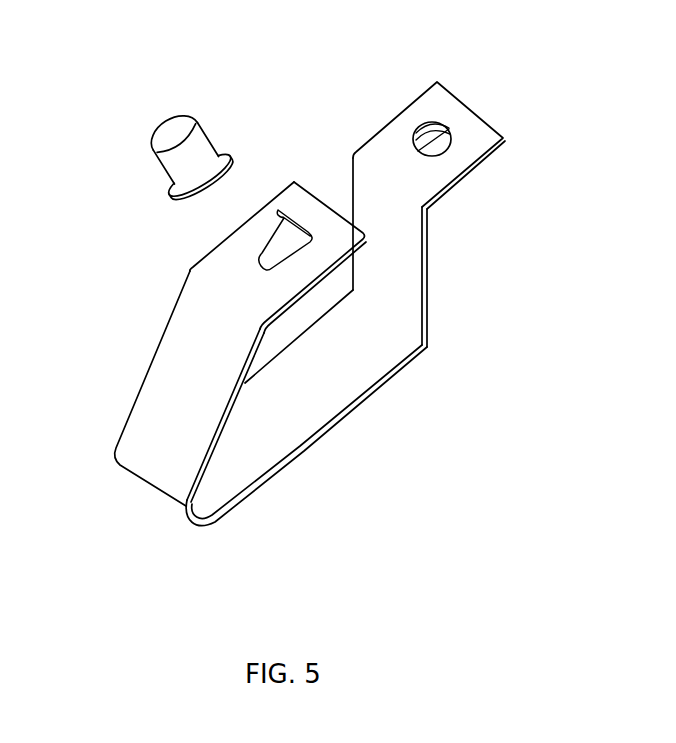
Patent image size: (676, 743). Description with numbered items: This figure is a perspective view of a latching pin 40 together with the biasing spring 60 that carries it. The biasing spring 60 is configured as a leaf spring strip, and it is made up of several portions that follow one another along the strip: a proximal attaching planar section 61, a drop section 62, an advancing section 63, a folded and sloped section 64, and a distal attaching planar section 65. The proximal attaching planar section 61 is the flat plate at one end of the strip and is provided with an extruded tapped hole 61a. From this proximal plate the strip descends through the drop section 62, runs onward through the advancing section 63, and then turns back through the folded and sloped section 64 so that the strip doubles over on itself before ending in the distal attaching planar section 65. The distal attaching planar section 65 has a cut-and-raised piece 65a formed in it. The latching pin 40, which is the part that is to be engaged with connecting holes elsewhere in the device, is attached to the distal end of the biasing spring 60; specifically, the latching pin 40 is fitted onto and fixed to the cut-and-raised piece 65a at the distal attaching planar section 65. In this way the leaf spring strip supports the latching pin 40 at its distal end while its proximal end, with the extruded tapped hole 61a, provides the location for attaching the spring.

The latching pin 40 is at (182, 133).
The biasing spring 60 is at (307, 286).
The proximal attaching planar section 61 is at (433, 154).
The extruded tapped hole 61a is at (422, 132).
The drop section 62 is at (403, 258).
The advancing section 63 is at (298, 412).
The folded and sloped section 64 is at (168, 383).
The distal attaching planar section 65 is at (210, 218).
The cut-and-raised piece 65a is at (287, 220).